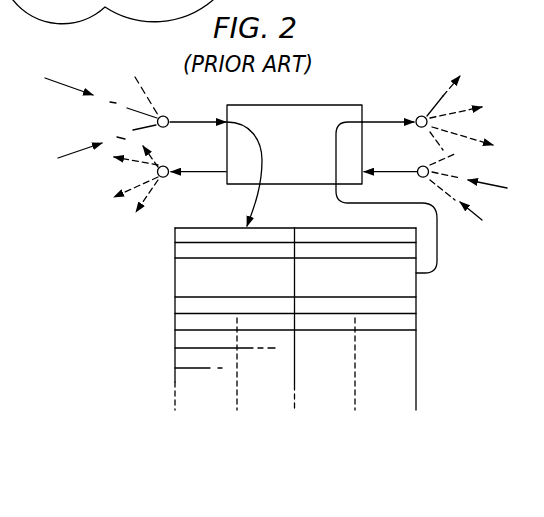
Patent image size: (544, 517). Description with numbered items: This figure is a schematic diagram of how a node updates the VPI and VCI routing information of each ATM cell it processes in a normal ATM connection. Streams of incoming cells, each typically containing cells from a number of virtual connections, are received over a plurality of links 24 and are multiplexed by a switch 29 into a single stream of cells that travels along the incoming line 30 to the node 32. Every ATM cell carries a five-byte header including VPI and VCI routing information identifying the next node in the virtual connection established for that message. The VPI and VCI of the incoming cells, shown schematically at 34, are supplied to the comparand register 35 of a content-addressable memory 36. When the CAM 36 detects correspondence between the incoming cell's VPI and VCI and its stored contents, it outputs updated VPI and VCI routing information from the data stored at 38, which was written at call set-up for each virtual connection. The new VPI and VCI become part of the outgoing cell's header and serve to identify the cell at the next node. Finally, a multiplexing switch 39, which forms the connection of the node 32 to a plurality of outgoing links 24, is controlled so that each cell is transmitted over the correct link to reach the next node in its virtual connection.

The links 24 is at (112, 138).
The switch 29 is at (168, 127).
The incoming line 30 is at (193, 120).
The node 32 is at (300, 146).
The VPI and VCI of the incoming cells 34 is at (175, 278).
The comparand register 35 is at (203, 228).
The content-addressable memory 36 is at (174, 336).
The data stored at call set-up 38 is at (417, 300).
The multiplexing switch 39 is at (166, 177).